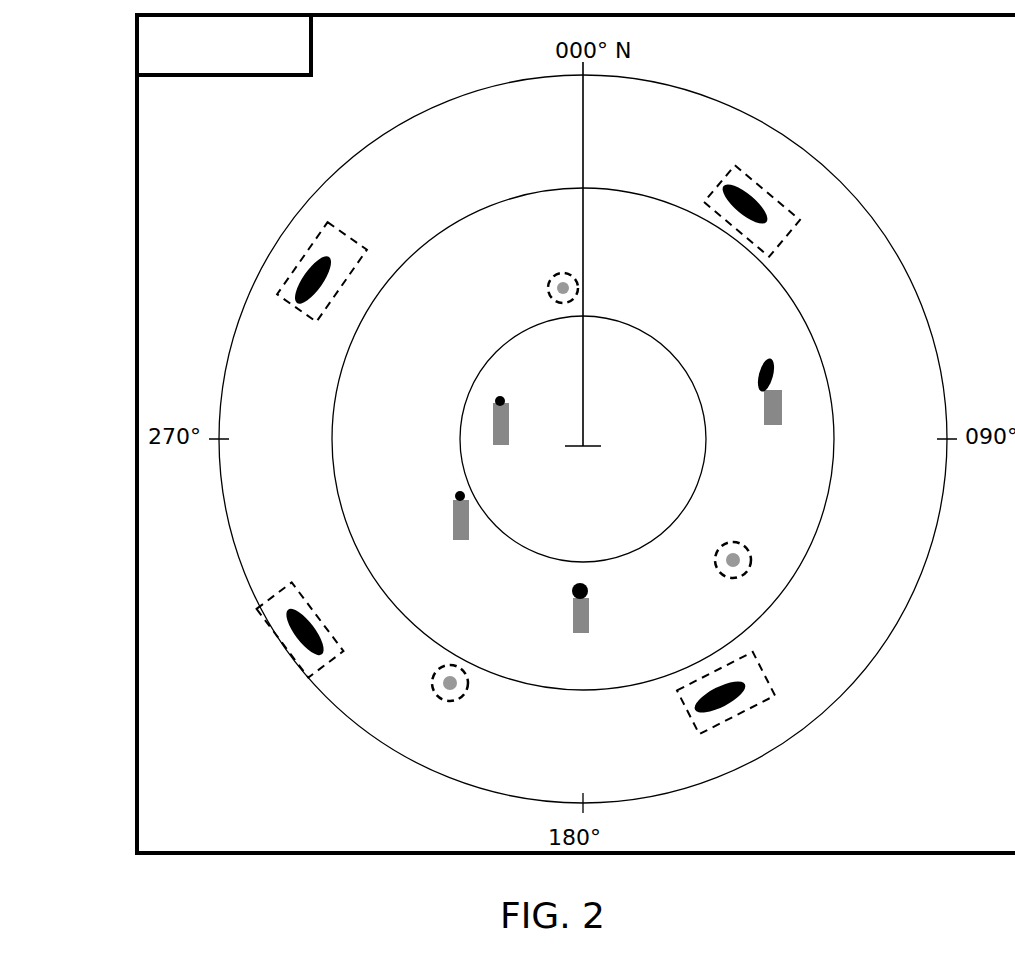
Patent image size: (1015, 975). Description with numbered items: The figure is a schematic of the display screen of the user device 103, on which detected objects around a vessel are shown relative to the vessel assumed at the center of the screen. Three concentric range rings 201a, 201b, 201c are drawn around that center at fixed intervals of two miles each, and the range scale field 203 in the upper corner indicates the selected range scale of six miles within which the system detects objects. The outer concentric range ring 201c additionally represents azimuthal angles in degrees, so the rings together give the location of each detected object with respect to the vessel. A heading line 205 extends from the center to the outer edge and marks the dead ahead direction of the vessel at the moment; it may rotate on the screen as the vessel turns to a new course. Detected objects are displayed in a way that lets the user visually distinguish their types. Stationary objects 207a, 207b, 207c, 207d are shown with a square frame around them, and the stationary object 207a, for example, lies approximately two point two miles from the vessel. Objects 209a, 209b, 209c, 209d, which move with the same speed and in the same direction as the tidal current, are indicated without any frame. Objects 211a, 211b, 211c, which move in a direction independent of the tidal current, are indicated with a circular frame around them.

The user device 103 is at (118, 182).
The range scale field 203 is at (313, 72).
The heading line 205 is at (583, 128).
The concentric range ring 201a is at (625, 321).
The concentric range ring 201b is at (628, 190).
The outer concentric range ring 201c is at (720, 102).
The stationary object 207a is at (760, 207).
The stationary object 207b is at (742, 700).
The stationary object 207c is at (292, 655).
The stationary object 207d is at (318, 263).
The object moving with the tidal current 209a is at (775, 372).
The object moving with the tidal current 209b is at (566, 591).
The object moving with the tidal current 209c is at (460, 495).
The object moving with the tidal current 209d is at (500, 400).
The object moving independent of the tidal current 211a is at (550, 282).
The object moving independent of the tidal current 211b is at (745, 541).
The object moving independent of the tidal current 211c is at (466, 688).